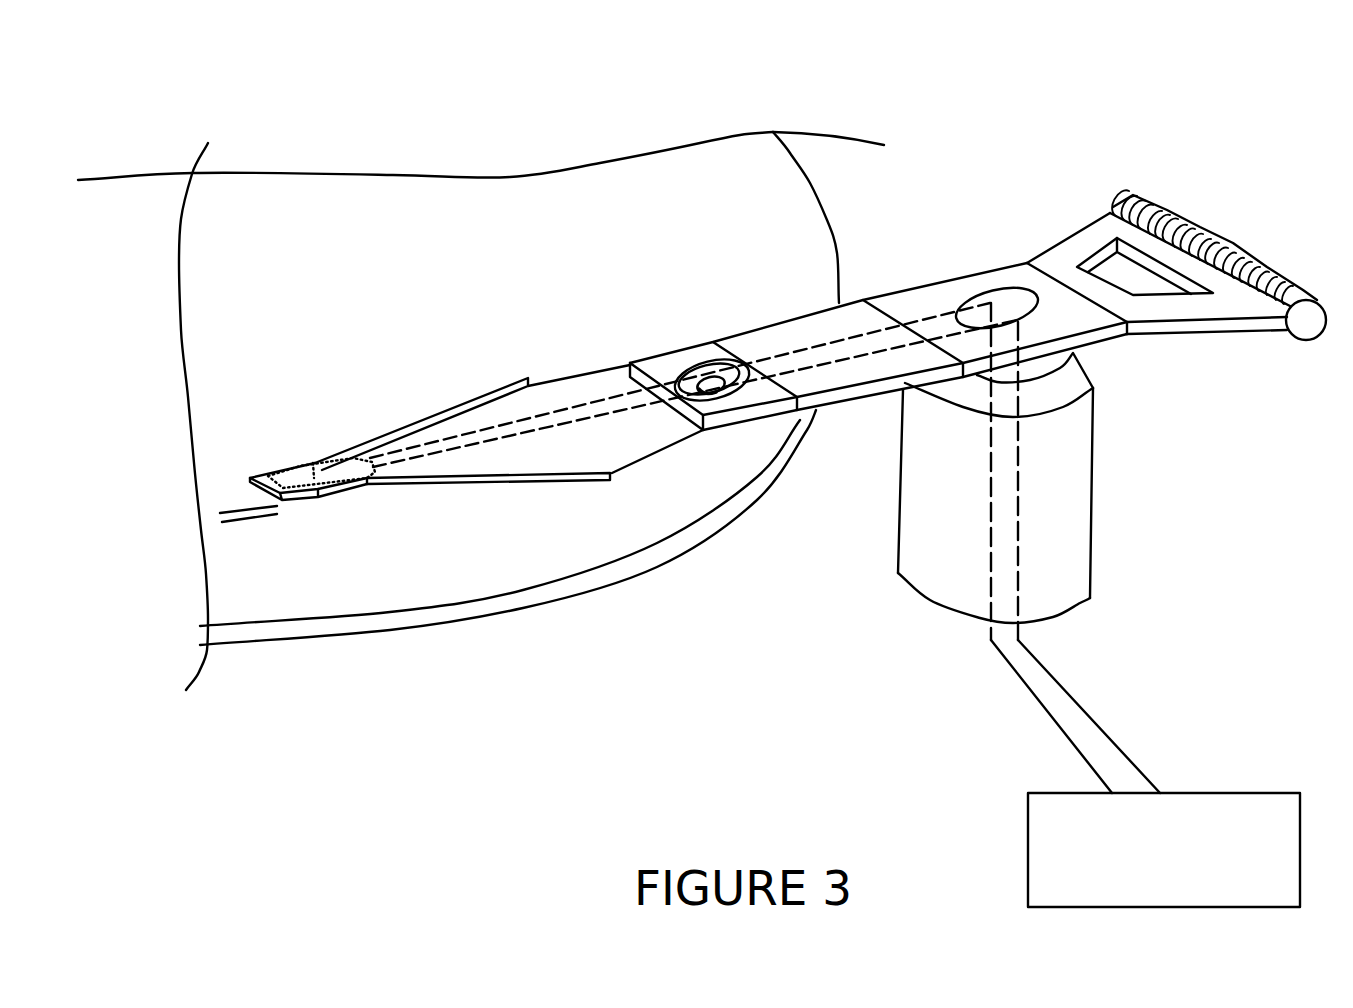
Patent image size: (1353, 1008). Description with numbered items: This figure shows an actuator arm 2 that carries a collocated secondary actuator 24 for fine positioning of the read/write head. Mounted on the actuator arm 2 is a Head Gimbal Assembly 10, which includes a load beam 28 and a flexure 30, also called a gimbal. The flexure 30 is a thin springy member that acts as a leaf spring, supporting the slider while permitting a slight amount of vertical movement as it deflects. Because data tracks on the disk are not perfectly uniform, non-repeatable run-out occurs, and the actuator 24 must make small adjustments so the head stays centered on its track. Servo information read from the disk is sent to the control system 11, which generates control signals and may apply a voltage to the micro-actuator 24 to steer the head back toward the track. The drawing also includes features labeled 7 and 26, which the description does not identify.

The Head Gimbal Assembly 10 is at (307, 290).
The actuator arm 2 is at (918, 247).
The handle 7 is at (1168, 210).
The load beam 28 is at (333, 467).
The collocated actuator 24 is at (277, 474).
The sensor 26 is at (320, 412).
The flexure 30 is at (313, 463).
The control system 11 is at (1177, 803).